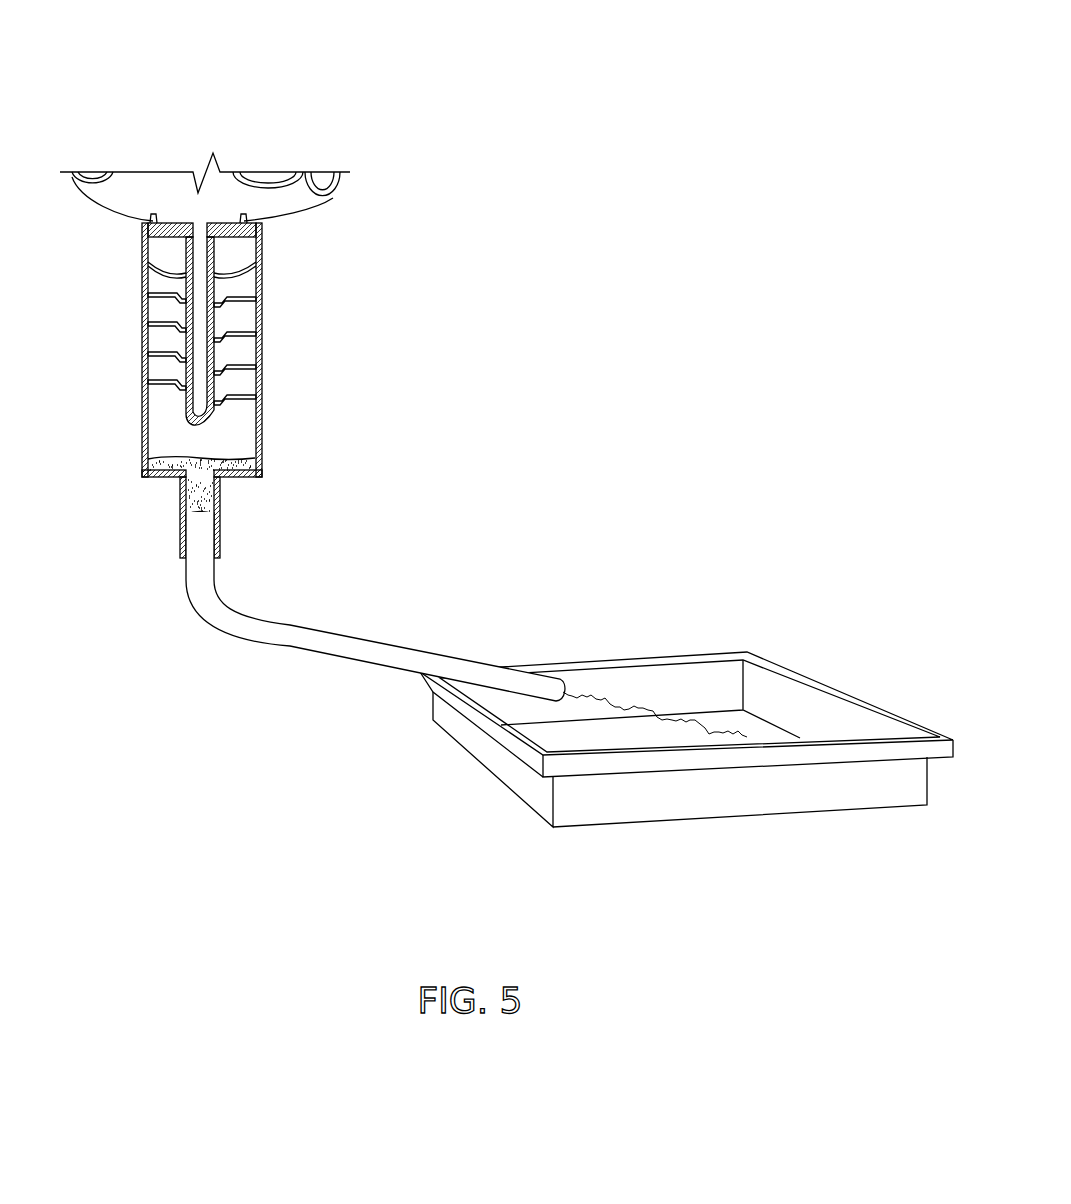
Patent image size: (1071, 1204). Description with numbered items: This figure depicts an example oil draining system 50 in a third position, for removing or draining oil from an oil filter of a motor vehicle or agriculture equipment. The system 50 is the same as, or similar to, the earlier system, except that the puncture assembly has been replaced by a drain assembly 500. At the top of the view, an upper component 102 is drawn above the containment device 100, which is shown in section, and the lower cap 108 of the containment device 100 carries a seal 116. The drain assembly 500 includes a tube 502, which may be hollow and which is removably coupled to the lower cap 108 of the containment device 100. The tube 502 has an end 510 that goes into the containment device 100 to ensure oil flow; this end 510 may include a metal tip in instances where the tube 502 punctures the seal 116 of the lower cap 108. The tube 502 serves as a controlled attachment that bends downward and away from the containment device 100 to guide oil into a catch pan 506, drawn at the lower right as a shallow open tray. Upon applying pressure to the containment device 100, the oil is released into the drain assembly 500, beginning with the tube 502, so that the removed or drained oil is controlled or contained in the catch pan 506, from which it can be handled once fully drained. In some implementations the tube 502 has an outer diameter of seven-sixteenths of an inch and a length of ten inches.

The oil draining system 50 is at (663, 105).
The containment device 100 is at (199, 439).
The container 102 is at (333, 199).
The lower cap 108 is at (262, 483).
The seal 116 is at (221, 524).
The drain assembly 500 is at (438, 711).
The tube 502 is at (466, 624).
The catch pan 506 is at (613, 659).
The end 510 is at (142, 568).